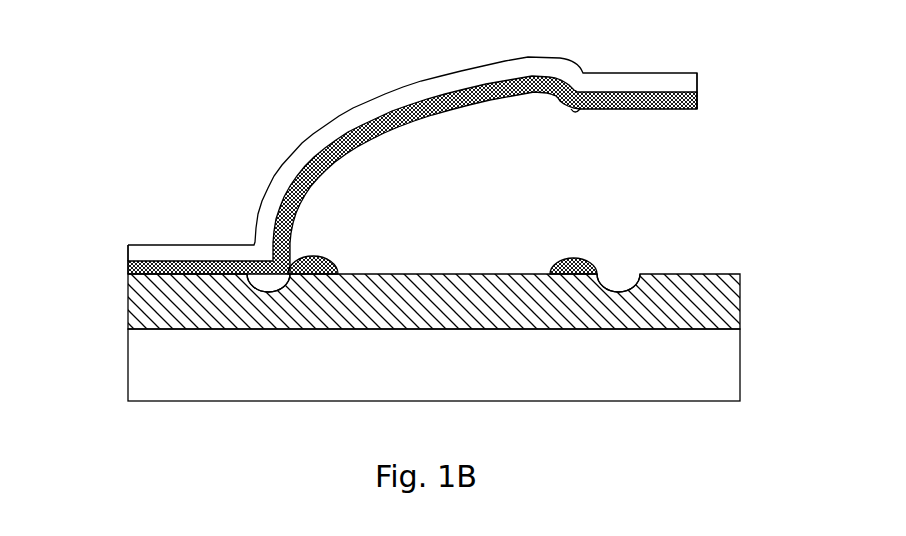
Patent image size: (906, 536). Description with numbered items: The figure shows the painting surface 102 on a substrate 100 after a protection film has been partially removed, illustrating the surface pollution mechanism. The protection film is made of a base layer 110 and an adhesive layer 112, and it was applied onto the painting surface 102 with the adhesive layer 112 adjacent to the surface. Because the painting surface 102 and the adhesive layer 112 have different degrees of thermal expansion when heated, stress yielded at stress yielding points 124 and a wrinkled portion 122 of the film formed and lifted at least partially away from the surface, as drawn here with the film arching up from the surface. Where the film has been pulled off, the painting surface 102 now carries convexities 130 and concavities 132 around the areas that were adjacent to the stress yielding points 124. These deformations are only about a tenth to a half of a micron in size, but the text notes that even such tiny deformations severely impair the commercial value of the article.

The substrate 100 is at (722, 348).
The painting surface 102 is at (725, 303).
The base layer of protection film 110 is at (683, 73).
The adhesive layer of protection film 112 is at (128, 258).
The wrinkled portion of protection film 122 is at (328, 137).
The stress yielding points of protection film 124 is at (550, 112).
The convexity formed by physical deformation 130 is at (550, 275).
The concavity formed by physical deformation 132 is at (260, 293).